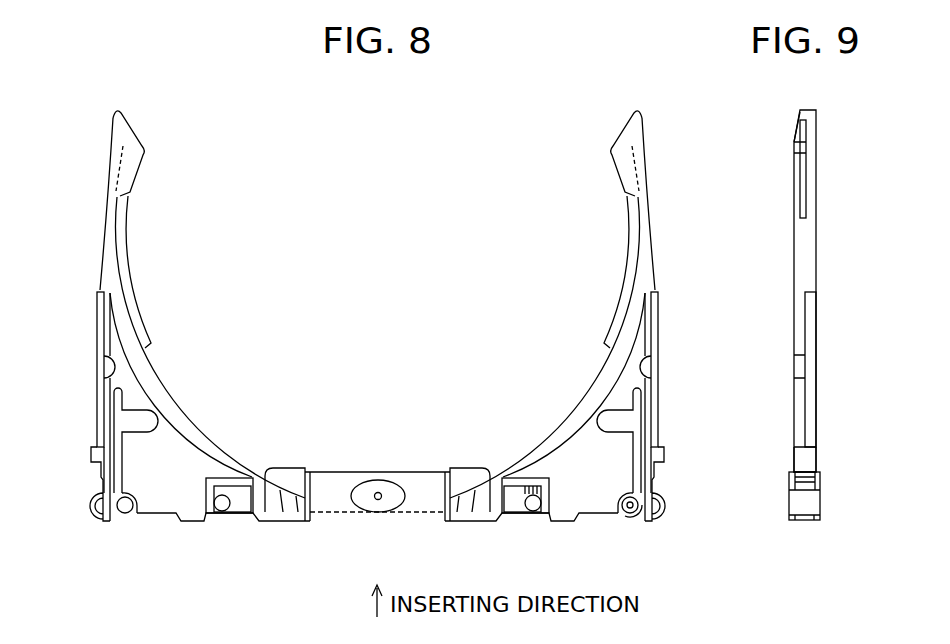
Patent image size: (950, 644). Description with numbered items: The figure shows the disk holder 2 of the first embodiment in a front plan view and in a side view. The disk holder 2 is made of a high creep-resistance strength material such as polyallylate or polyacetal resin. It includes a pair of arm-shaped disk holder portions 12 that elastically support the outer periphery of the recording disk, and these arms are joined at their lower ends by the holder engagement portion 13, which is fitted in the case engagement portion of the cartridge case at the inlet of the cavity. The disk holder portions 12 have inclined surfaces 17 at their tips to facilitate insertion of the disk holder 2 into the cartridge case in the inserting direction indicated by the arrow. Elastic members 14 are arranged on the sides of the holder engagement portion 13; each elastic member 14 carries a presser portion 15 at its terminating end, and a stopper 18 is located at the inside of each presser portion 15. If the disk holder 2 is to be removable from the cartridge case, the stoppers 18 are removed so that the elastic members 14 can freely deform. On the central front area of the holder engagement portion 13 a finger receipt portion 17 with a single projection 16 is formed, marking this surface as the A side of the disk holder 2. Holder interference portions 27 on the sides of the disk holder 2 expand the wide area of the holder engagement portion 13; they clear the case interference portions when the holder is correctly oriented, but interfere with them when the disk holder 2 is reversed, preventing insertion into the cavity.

In FIG. 8, the disk holder 2 is at (648, 393).
In FIG. 9, the disk holder 2 is at (808, 253).
In FIG. 8, the disk holder portion 12 is at (115, 150).
In FIG. 9, the disk holder portion 12 is at (808, 143).
In FIG. 8, the holder engagement portion 13 is at (585, 505).
In FIG. 9, the holder engagement portion 13 is at (806, 500).
In FIG. 8, the elastic member 14 is at (95, 462).
In FIG. 9, the elastic member 14 is at (808, 457).
In FIG. 8, the presser portion 15 is at (88, 506).
In FIG. 8, the projection 16 is at (378, 496).
In FIG. 8, the finger receipt portion 17 is at (362, 490).
In FIG. 9, the finger receipt portion 17 is at (800, 115).
In FIG. 8, the stopper 18 is at (125, 513).
In FIG. 8, the holder interference portion 27 is at (100, 322).
In FIG. 9, the holder interference portion 27 is at (812, 315).